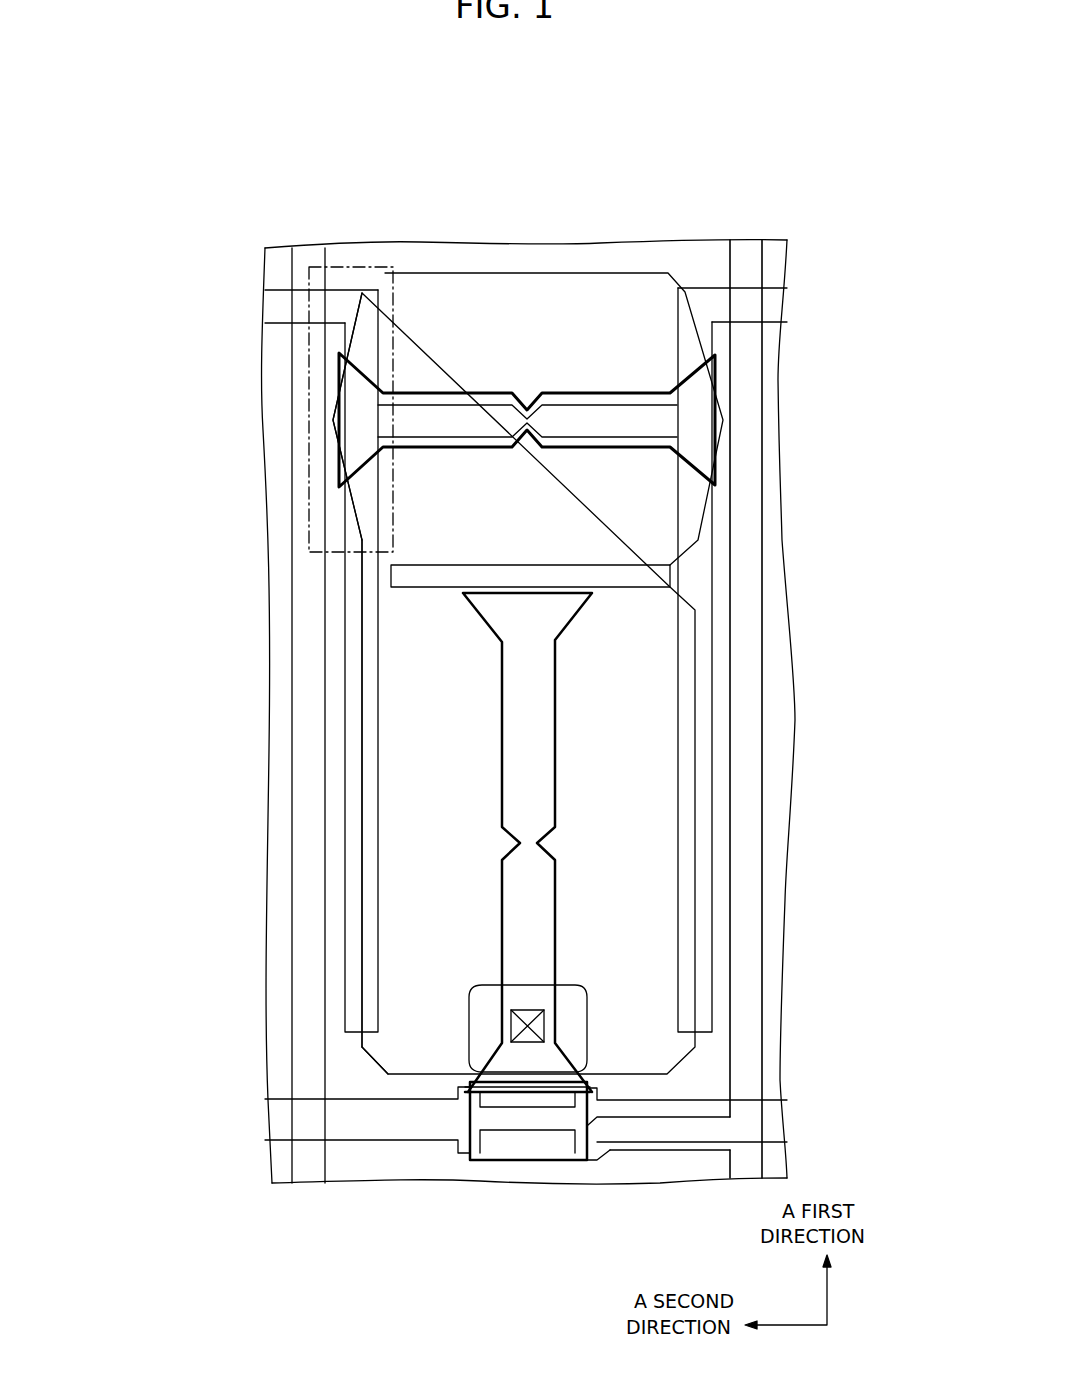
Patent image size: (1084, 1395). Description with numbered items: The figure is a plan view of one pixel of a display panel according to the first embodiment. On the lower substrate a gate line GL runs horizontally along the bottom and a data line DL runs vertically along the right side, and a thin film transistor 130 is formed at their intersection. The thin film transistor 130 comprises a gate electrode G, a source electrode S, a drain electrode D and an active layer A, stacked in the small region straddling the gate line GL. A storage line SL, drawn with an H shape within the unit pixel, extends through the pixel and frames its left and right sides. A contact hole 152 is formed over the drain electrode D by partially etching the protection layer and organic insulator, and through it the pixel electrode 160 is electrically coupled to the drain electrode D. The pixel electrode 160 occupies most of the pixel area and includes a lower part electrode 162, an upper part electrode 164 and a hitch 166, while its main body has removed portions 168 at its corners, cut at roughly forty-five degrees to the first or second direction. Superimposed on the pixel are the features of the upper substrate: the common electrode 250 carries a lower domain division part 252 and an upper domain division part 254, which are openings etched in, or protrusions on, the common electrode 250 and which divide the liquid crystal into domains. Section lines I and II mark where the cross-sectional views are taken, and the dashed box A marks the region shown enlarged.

The thin film transistor 130 is at (553, 1175).
The contact hole 152 is at (533, 1043).
The pixel electrode 160 is at (180, 512).
The lower part electrode 162 is at (395, 893).
The upper part electrode 164 is at (402, 520).
The hitch 166 is at (387, 578).
The removed portion 168 is at (383, 1073).
The common electrode 250 is at (503, 324).
The lower domain division part 252 is at (545, 905).
The upper domain division part 254 is at (590, 398).
The gate line GL is at (373, 1123).
The data line DL is at (752, 768).
The storage line SL is at (700, 572).
The gate electrode G is at (462, 1145).
The active layer A is at (310, 410).
The source electrode S is at (600, 1147).
The drain electrode D is at (577, 1030).
The section line I-I' I is at (528, 1244).
The section line II-II' II is at (824, 683).